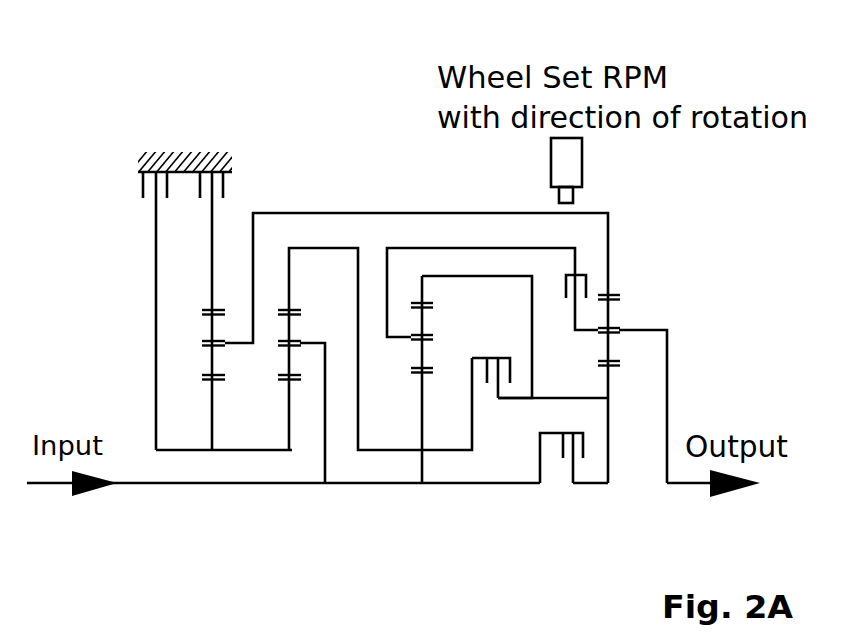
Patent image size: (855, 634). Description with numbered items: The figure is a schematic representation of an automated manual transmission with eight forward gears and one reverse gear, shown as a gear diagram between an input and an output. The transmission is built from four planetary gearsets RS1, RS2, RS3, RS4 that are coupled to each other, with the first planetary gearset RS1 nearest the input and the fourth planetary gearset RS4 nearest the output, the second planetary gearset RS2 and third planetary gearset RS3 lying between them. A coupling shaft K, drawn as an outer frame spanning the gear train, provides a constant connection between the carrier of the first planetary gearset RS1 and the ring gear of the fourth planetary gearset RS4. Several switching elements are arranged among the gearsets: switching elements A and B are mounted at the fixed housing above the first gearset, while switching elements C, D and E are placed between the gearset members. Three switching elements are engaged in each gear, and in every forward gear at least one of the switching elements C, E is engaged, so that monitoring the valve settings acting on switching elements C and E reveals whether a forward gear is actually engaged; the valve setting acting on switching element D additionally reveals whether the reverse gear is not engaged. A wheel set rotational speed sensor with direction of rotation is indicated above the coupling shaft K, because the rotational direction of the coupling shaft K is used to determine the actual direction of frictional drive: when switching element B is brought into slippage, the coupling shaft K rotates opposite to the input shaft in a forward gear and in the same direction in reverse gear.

The coupling shaft K is at (345, 213).
The switching element A is at (187, 284).
The switching element B is at (211, 284).
The switching element C is at (571, 457).
The switching element D is at (565, 289).
The switching element E is at (499, 376).
The first planetary gearset RS1 is at (202, 353).
The second planetary gearset RS2 is at (297, 352).
The third planetary gearset RS3 is at (432, 347).
The fourth planetary gearset RS4 is at (622, 336).